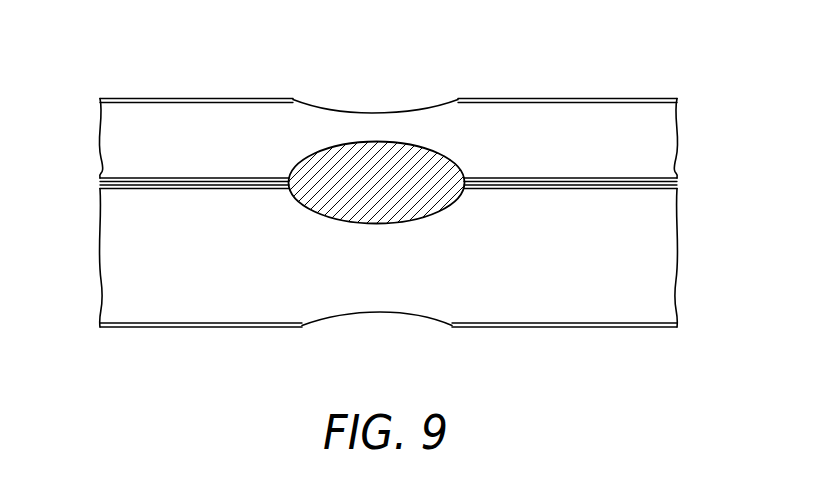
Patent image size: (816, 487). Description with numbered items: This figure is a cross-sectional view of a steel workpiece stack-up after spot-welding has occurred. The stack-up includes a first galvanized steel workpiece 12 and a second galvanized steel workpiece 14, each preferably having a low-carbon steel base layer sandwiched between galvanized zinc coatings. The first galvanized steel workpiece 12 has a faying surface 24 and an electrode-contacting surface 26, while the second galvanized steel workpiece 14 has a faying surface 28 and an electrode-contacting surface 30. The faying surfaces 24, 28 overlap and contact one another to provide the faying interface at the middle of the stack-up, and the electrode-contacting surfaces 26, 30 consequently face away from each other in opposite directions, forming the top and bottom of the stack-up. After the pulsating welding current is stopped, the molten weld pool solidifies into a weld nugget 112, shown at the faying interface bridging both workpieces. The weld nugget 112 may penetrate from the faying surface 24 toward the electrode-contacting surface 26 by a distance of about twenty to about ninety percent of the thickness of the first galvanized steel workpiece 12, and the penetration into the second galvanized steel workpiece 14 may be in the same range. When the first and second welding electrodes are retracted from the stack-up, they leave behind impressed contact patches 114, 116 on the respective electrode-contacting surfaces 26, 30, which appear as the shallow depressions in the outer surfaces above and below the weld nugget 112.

The first galvanized steel workpiece 12 is at (118, 139).
The second galvanized steel workpiece 14 is at (118, 250).
The faying surface 24 is at (637, 189).
The electrode-contacting surface 26 is at (595, 98).
The faying surface 28 is at (652, 179).
The electrode-contacting surface 30 is at (625, 328).
The weld nugget 112 is at (413, 165).
The impressed contact patch 114 is at (365, 112).
The impressed contact patch 116 is at (338, 317).